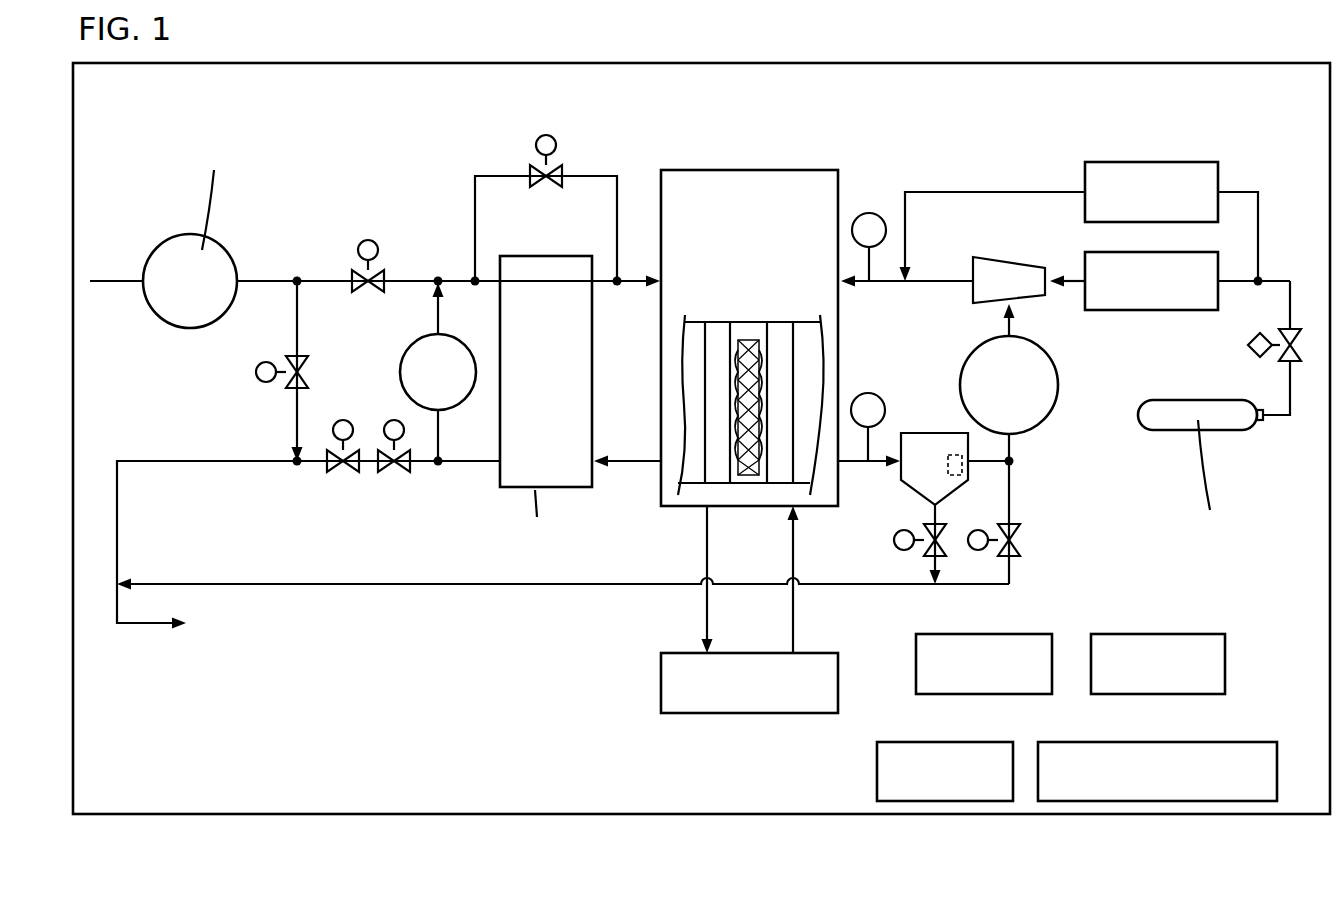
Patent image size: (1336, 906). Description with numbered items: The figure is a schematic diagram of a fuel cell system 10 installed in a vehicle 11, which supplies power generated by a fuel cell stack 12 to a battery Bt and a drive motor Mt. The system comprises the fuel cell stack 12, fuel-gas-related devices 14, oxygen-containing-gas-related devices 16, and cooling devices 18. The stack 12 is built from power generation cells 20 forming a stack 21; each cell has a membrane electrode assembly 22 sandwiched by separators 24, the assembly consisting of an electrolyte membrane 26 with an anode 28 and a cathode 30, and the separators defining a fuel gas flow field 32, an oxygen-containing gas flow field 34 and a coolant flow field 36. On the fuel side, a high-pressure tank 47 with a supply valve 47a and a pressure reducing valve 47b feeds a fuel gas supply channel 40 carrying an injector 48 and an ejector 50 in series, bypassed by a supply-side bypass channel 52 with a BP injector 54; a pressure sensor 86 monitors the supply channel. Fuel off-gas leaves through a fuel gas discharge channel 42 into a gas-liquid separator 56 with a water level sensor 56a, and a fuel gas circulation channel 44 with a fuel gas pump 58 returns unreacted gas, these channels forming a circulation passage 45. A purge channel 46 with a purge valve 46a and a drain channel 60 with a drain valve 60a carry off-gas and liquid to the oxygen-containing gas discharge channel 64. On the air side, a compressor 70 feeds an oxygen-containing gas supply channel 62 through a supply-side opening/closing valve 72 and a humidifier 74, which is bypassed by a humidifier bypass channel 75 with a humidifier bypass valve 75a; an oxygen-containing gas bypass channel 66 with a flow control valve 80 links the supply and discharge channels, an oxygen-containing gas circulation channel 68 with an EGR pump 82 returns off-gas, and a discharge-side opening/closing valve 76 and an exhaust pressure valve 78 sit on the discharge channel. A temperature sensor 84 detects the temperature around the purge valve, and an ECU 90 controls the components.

The fuel cell system 10 is at (735, 119).
The vehicle 11 is at (518, 58).
The fuel cell stack 12 is at (646, 166).
The fuel-gas-related devices 14 is at (1041, 164).
The oxygen-containing-gas-related devices 16 is at (264, 222).
The cooling devices 18 is at (712, 722).
The power generation cells 20 is at (770, 487).
The stack 21 is at (799, 496).
The membrane electrode assembly 22 is at (793, 270).
The separators 24 is at (735, 375).
The electrolyte membrane 26 is at (749, 345).
The anode 28 is at (761, 345).
The cathode 30 is at (738, 345).
The fuel gas flow field 32 is at (762, 405).
The oxygen-containing gas flow field 34 is at (735, 440).
The coolant flow field 36 is at (735, 425).
The fuel gas supply channel 40 is at (888, 283).
The fuel gas discharge channel 42 is at (850, 466).
The fuel gas circulation channel 44 is at (1012, 447).
The circulation passage 45 is at (1030, 322).
The purge channel 46 is at (520, 587).
The purge valve 46a is at (1016, 541).
The high-pressure tank 47 is at (1175, 433).
The supply valve 47a is at (1262, 432).
The pressure reducing valve 47b is at (1283, 330).
The injector 48 is at (1150, 312).
The ejector 50 is at (995, 262).
The supply-side bypass channel 52 is at (935, 192).
The BP injector 54 is at (1152, 162).
The gas-liquid separator 56 is at (945, 432).
The water level sensor 56a is at (980, 468).
The fuel gas pump 58 is at (1060, 380).
The drain channel 60 is at (938, 566).
The drain valve 60a is at (894, 546).
The oxygen-containing gas supply channel 62 is at (270, 277).
The oxygen-containing gas discharge channel 64 is at (230, 466).
The oxygen-containing gas bypass channel 66 is at (291, 409).
The oxygen-containing gas circulation channel 68 is at (440, 433).
The compressor 70 is at (190, 234).
The supply-side opening/closing valve 72 is at (368, 240).
The humidifier 74 is at (545, 255).
The humidifier bypass channel 75 is at (506, 176).
The humidifier bypass valve 75a is at (549, 135).
The discharge-side opening/closing valve 76 is at (393, 478).
The exhaust pressure valve 78 is at (342, 478).
The flow control valve 80 is at (257, 372).
The EGR pump 82 is at (404, 350).
The temperature sensor 84 is at (1160, 742).
The pressure sensor 86 is at (870, 212).
The ECU 90 is at (1160, 634).
The battery Bt is at (985, 634).
The drive motor Mt is at (932, 740).